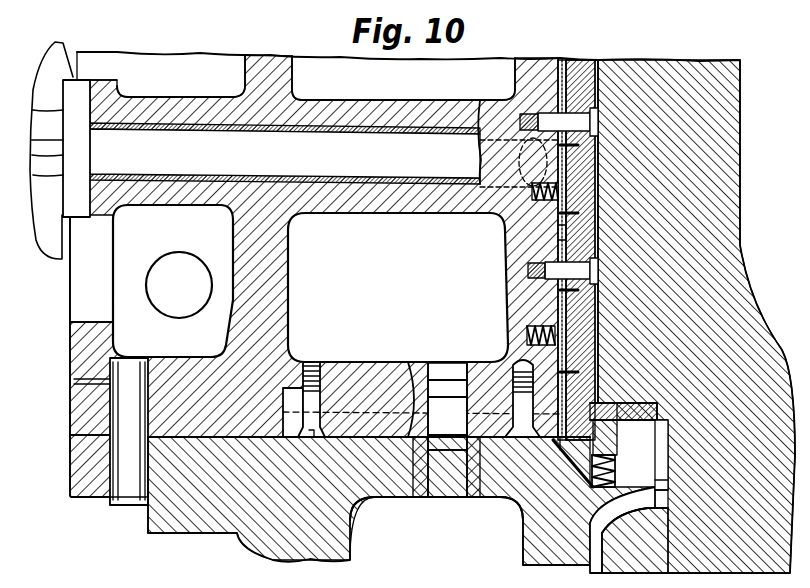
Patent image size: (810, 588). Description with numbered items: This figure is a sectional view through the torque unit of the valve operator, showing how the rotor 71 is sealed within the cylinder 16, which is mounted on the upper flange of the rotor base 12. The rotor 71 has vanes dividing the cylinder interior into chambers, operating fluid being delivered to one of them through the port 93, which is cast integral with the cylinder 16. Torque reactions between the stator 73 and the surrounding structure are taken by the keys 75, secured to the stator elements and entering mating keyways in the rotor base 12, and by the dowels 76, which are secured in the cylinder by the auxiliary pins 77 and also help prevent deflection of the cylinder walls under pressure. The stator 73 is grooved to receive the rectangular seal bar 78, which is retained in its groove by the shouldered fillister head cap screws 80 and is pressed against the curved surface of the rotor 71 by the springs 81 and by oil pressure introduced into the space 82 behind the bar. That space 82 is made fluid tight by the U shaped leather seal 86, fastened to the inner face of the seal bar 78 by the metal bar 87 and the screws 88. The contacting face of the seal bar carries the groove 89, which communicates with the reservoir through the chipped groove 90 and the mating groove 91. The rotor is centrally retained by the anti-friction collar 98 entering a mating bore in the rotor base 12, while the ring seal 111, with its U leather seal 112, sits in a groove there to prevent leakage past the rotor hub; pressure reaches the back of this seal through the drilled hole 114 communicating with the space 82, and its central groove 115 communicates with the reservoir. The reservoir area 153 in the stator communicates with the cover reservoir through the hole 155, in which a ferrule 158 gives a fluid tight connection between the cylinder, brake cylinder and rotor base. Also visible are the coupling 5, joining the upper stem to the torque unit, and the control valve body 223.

The coupling 5 is at (618, 560).
The rotor base 12 is at (240, 538).
The cylinder 16 is at (70, 338).
The rotor 71 is at (740, 265).
The stator 73 is at (505, 280).
The key 75 is at (365, 402).
The dowel 76 is at (120, 505).
The auxiliary pin 77 is at (74, 381).
The seal bar 78 is at (578, 60).
The shouldered fillister head cap screw 80 is at (548, 120).
The spring 81 is at (535, 196).
The space 82 is at (560, 232).
The U shaped leather seal 86 is at (585, 198).
The metal bar 87 is at (560, 298).
The screw 88 is at (575, 300).
The groove 89 is at (598, 242).
The chipped groove 90 is at (615, 463).
The mating groove 91 is at (660, 466).
The port 93 is at (349, 156).
The anti-friction collar 98 is at (657, 412).
The ring seal 111 is at (648, 403).
The U leather seal 112 is at (578, 470).
The drilled hole 114 is at (560, 450).
The central groove 115 is at (598, 403).
The reservoir area 153 is at (350, 230).
The hole 155 is at (445, 490).
The ferrule 158 is at (447, 430).
The control valve body 223 is at (63, 259).